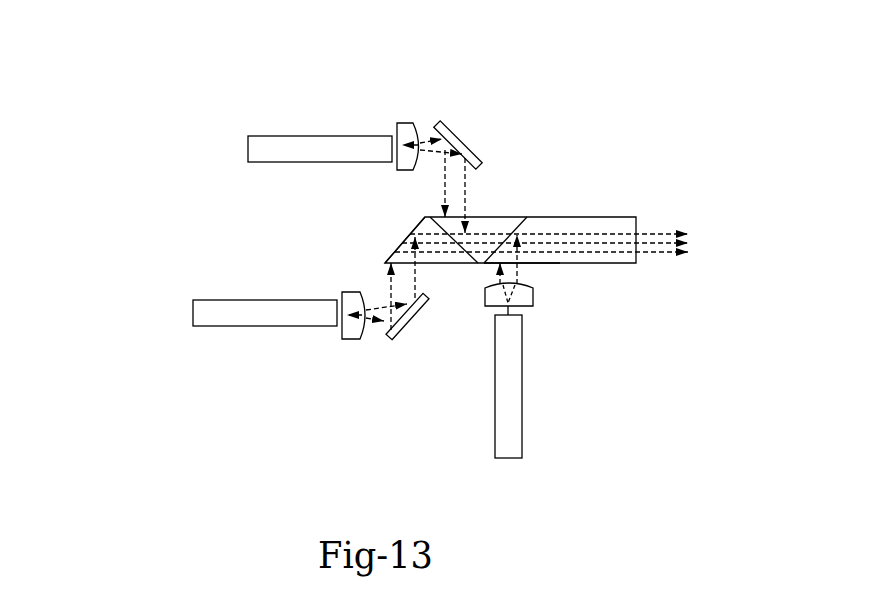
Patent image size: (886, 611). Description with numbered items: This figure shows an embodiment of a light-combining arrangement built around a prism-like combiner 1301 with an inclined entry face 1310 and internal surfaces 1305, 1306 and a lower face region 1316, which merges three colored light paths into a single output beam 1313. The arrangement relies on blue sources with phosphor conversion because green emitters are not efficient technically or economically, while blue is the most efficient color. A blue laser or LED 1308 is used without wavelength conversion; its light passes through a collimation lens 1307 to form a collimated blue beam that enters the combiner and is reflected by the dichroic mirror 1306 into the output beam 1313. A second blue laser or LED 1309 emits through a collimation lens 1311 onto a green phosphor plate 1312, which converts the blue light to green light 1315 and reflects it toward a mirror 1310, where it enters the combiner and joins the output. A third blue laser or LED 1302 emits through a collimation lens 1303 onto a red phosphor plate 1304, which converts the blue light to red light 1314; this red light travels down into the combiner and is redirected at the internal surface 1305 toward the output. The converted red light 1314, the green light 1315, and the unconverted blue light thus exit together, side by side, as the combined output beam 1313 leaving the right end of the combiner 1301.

The prism 1301 is at (575, 213).
The blue laser or LED 1302 is at (330, 128).
The collimation lens 1303 is at (403, 123).
The red phosphor plate 1304 is at (457, 127).
The first reflecting surface 1305 is at (452, 229).
The dichroic mirror 1306 is at (527, 223).
The collimation lens 1307 is at (535, 303).
The blue laser or LED 1308 is at (522, 385).
The second light source 1309 is at (200, 297).
The mirror 1310 is at (393, 242).
The collimation lens 1311 is at (340, 342).
The green phosphor plate 1312 is at (397, 338).
The output beam 1313 is at (661, 232).
The red light 1314 is at (443, 200).
The green light 1315 is at (386, 270).
The third light beam 1316 is at (518, 270).